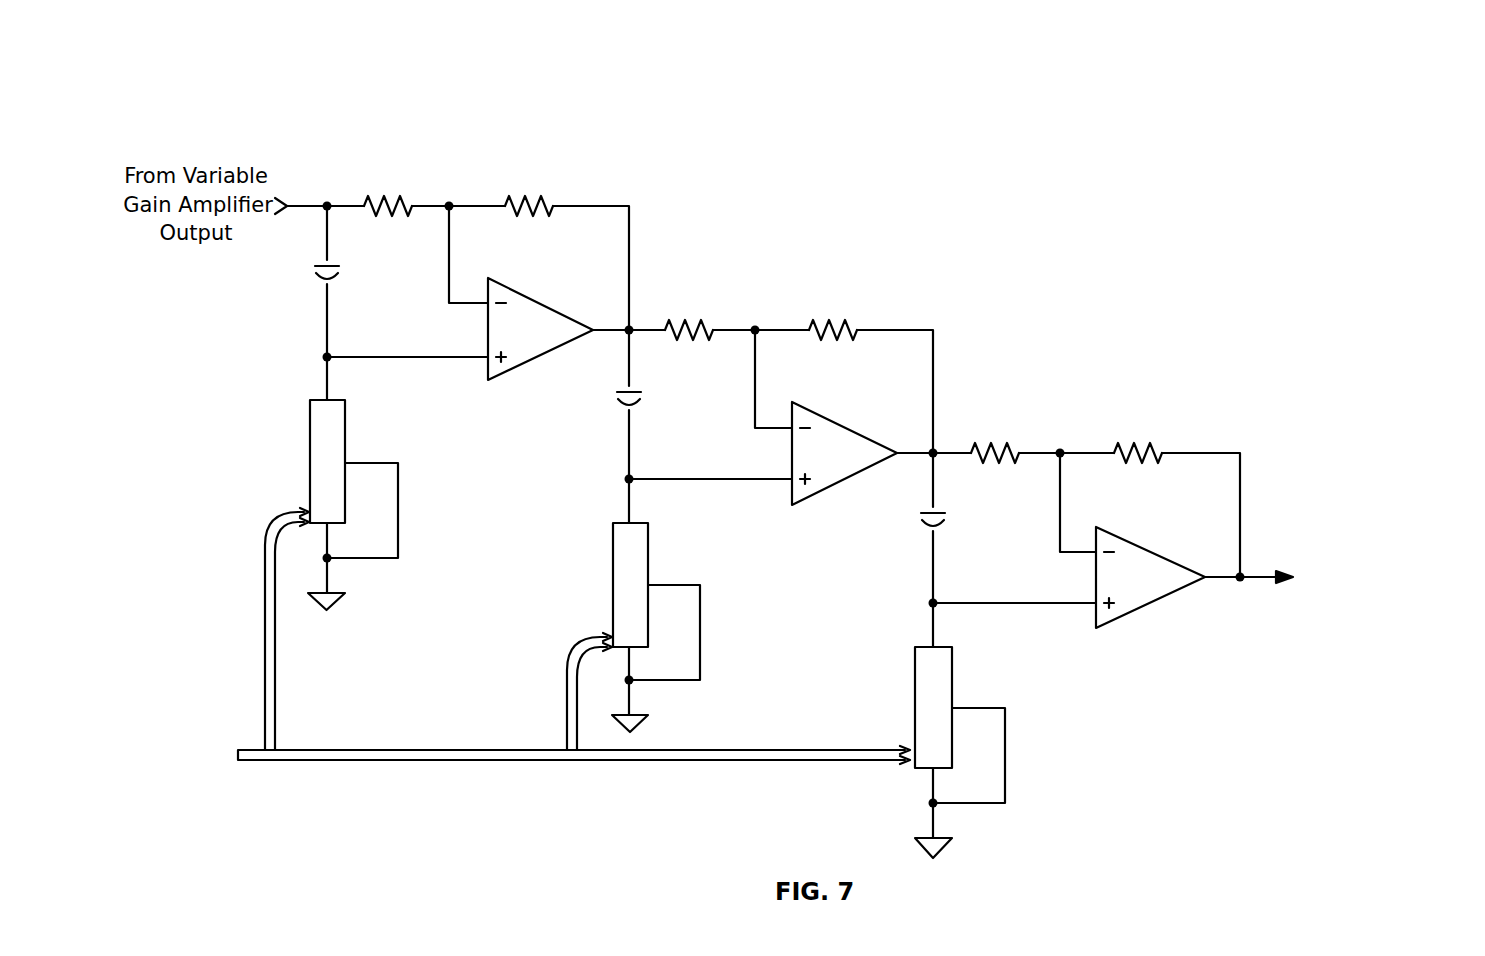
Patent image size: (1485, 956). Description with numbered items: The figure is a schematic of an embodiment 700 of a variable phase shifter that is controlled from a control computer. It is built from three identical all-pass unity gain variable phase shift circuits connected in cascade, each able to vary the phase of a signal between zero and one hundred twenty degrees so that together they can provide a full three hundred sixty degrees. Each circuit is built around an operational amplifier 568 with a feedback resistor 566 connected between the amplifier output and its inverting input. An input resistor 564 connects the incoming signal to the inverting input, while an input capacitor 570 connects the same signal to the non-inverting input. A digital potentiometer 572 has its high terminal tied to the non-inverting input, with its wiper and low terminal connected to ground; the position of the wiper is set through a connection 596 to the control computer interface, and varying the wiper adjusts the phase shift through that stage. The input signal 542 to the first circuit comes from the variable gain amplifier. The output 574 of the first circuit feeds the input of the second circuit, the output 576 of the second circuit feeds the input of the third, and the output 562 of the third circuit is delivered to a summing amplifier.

The input signal 542 is at (307, 190).
The output of the third phase shift circuit 562 is at (1258, 560).
The input resistor 564 is at (400, 185).
The feedback resistor 566 is at (547, 190).
The operational amplifier 568 is at (557, 357).
The input capacitor 570 is at (307, 298).
The digital potentiometer 572 is at (288, 418).
The output of the first phase shift circuit 574 is at (647, 310).
The output of the second phase shift circuit 576 is at (952, 428).
The connection to control computer interface 596 is at (273, 768).
The embodiment of variable phase shifter 700 is at (930, 164).